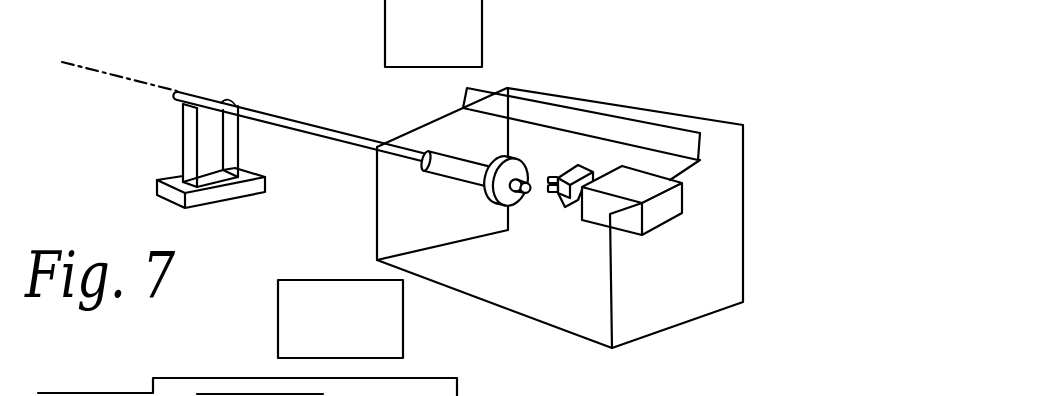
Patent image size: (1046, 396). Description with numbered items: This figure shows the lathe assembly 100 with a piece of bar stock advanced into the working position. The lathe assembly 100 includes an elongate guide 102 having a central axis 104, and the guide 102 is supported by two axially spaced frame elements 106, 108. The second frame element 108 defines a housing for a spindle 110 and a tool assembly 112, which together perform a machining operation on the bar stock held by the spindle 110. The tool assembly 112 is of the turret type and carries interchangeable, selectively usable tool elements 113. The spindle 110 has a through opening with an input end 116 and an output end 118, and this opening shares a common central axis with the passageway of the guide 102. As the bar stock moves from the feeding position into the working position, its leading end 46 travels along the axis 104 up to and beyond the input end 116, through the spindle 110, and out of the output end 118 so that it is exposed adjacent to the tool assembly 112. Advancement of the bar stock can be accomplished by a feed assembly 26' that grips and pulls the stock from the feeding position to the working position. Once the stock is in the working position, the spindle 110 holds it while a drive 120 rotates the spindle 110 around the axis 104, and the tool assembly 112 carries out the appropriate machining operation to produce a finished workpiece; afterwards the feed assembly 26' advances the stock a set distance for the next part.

The lathe assembly 100 is at (758, 100).
The elongate guide 102 is at (323, 127).
The central axis 104 is at (122, 78).
The frame element 106 is at (218, 195).
The frame element 108 is at (744, 250).
The spindle 110 is at (512, 162).
The tool assembly 112 is at (683, 197).
The tool elements 113 is at (576, 167).
The input end 116 is at (422, 168).
The output end 118 is at (516, 205).
The drive 120 is at (463, 153).
The feed assembly 26' is at (391, 276).
The leading end 46 is at (524, 172).